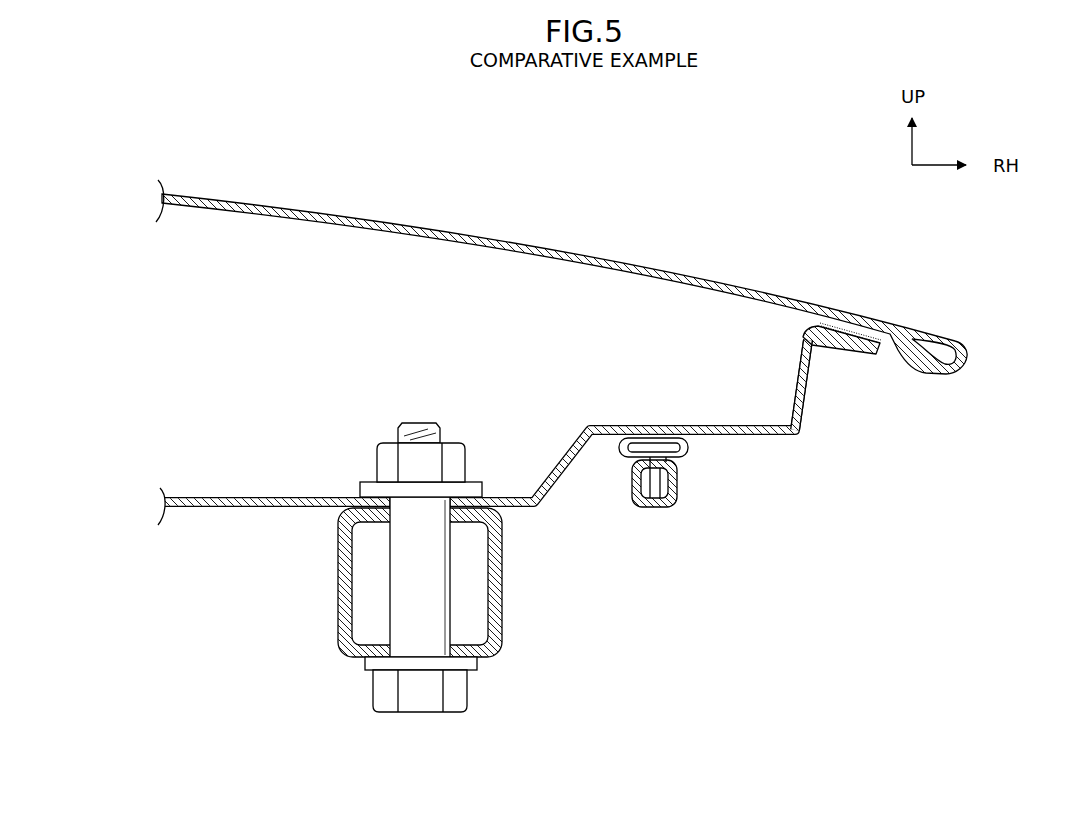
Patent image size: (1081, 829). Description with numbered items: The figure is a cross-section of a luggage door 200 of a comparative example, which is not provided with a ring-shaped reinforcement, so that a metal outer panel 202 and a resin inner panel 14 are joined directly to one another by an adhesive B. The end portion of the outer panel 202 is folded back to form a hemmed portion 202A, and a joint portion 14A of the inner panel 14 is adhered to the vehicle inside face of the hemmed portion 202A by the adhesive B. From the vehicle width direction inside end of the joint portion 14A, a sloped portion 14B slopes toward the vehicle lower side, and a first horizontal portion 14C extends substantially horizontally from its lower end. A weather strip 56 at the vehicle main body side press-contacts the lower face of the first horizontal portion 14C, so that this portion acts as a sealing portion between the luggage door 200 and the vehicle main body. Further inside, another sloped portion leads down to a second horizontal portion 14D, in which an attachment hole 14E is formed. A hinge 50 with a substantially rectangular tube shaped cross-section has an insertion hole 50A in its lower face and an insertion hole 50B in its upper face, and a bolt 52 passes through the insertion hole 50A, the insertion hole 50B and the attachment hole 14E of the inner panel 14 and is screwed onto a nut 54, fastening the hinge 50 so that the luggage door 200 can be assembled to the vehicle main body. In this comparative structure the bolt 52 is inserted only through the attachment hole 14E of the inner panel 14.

The inner panel 14 is at (542, 458).
The joint portion 14A is at (866, 356).
The sloped portion 14B is at (802, 398).
The first horizontal portion 14C is at (722, 438).
The second horizontal portion 14D is at (283, 497).
The attachment hole 14E is at (408, 495).
The hinge 50 is at (469, 587).
The insertion hole 50A is at (392, 650).
The insertion hole 50B is at (391, 512).
The bolt 52 is at (470, 690).
The nut 54 is at (446, 442).
The weather strip 56 is at (630, 477).
The luggage door 200 is at (618, 180).
The outer panel 202 is at (595, 283).
The hemmed portion 202A is at (942, 374).
The adhesive B is at (812, 327).